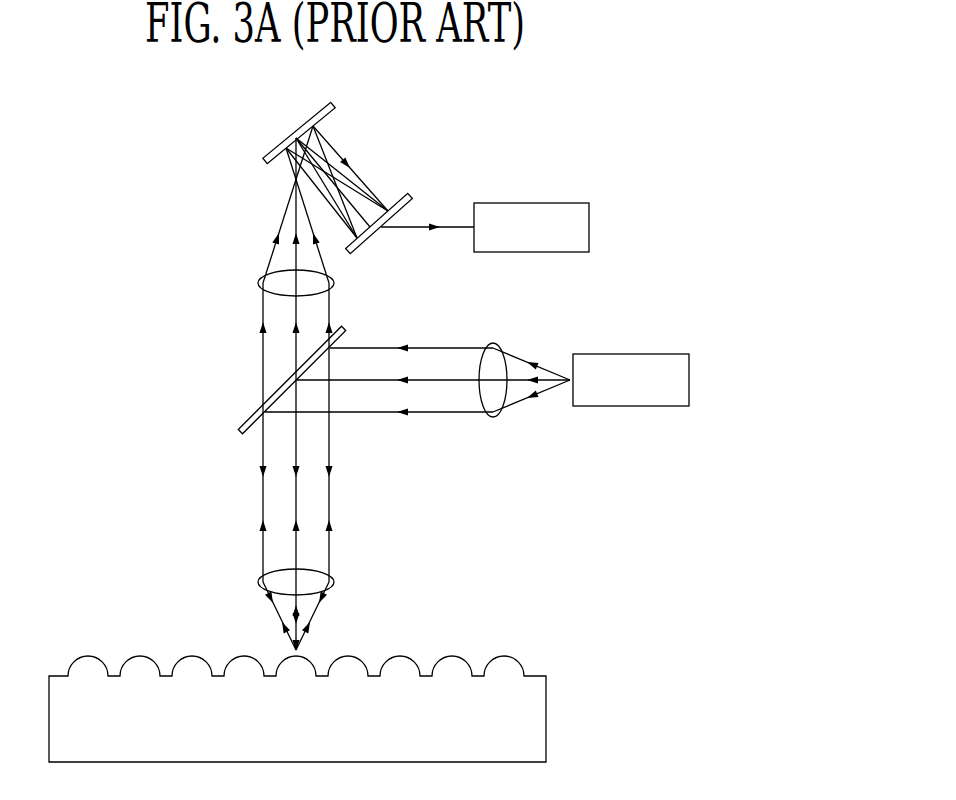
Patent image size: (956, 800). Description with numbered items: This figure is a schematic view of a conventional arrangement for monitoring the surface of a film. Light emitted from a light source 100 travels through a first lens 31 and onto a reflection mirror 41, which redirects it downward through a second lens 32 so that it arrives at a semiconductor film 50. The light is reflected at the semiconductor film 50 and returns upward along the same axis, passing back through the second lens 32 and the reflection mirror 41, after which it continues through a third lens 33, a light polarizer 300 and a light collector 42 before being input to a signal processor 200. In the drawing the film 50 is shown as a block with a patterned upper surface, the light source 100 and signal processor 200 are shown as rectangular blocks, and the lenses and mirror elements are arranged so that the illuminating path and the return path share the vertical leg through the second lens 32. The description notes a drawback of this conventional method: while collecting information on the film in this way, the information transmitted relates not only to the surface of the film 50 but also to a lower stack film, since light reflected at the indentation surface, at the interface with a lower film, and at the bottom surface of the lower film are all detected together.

The light polarizer 300 is at (335, 100).
The light collector 42 is at (411, 194).
The third lens 33 is at (334, 282).
The reflection mirror 41 is at (244, 421).
The first lens 31 is at (493, 343).
The second lens 32 is at (334, 584).
The light source 100 is at (690, 388).
The signal processor 200 is at (590, 231).
The semiconductor film 50 is at (547, 742).